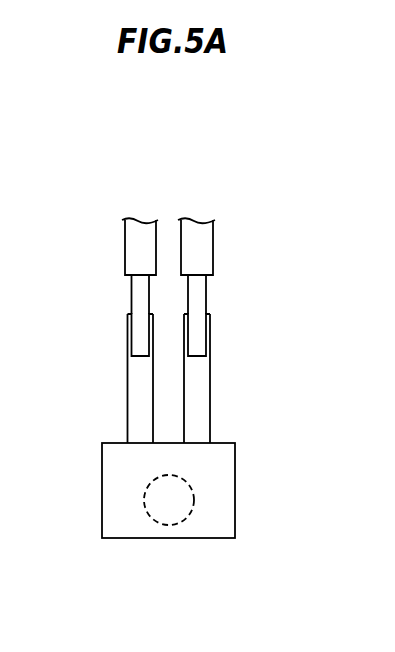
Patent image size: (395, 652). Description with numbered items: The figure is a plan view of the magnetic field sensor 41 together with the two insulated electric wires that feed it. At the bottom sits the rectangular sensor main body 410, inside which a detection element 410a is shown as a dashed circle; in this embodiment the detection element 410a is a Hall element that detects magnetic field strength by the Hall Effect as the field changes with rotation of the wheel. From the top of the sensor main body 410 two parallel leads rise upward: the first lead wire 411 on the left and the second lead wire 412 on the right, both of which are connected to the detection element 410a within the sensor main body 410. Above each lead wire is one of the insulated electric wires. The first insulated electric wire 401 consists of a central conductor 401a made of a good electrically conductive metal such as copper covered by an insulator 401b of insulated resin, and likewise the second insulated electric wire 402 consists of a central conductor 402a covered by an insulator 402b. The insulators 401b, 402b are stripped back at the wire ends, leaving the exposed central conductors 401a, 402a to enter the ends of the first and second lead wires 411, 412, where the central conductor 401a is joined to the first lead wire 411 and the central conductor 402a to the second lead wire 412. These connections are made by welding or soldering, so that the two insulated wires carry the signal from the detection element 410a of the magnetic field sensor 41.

The magnetic field sensor 41 is at (86, 565).
The first insulated electric wire 401 is at (144, 197).
The second insulated electric wire 402 is at (213, 197).
The central conductor 401a is at (140, 347).
The central conductor 402a is at (200, 351).
The insulator 401b is at (130, 260).
The insulator 402b is at (203, 260).
The sensor main body 410 is at (102, 472).
The detection element 410a is at (192, 489).
The first lead wire 411 is at (137, 409).
The second lead wire 412 is at (199, 397).